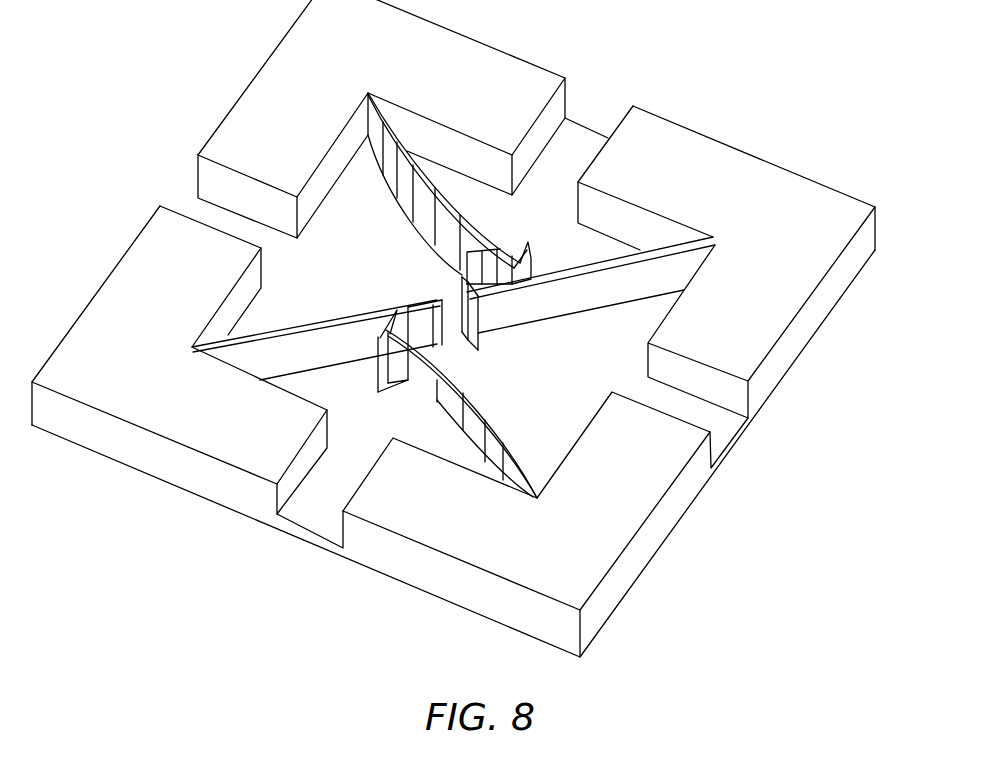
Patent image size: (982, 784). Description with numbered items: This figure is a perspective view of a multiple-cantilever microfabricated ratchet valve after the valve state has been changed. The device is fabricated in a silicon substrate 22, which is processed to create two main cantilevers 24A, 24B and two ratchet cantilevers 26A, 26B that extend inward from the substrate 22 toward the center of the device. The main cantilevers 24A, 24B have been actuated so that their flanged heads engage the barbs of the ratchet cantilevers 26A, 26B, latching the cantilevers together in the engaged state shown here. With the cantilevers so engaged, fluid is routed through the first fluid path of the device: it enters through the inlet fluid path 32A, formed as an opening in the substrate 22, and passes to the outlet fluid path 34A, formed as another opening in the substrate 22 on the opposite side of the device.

The silicon substrate 22 is at (772, 173).
The main cantilever 24A is at (479, 236).
The main cantilever 24B is at (490, 405).
The ratchet cantilever 26A is at (548, 308).
The ratchet cantilever 26B is at (285, 326).
The inlet fluid path 32A is at (195, 208).
The outlet fluid path 34A is at (723, 433).